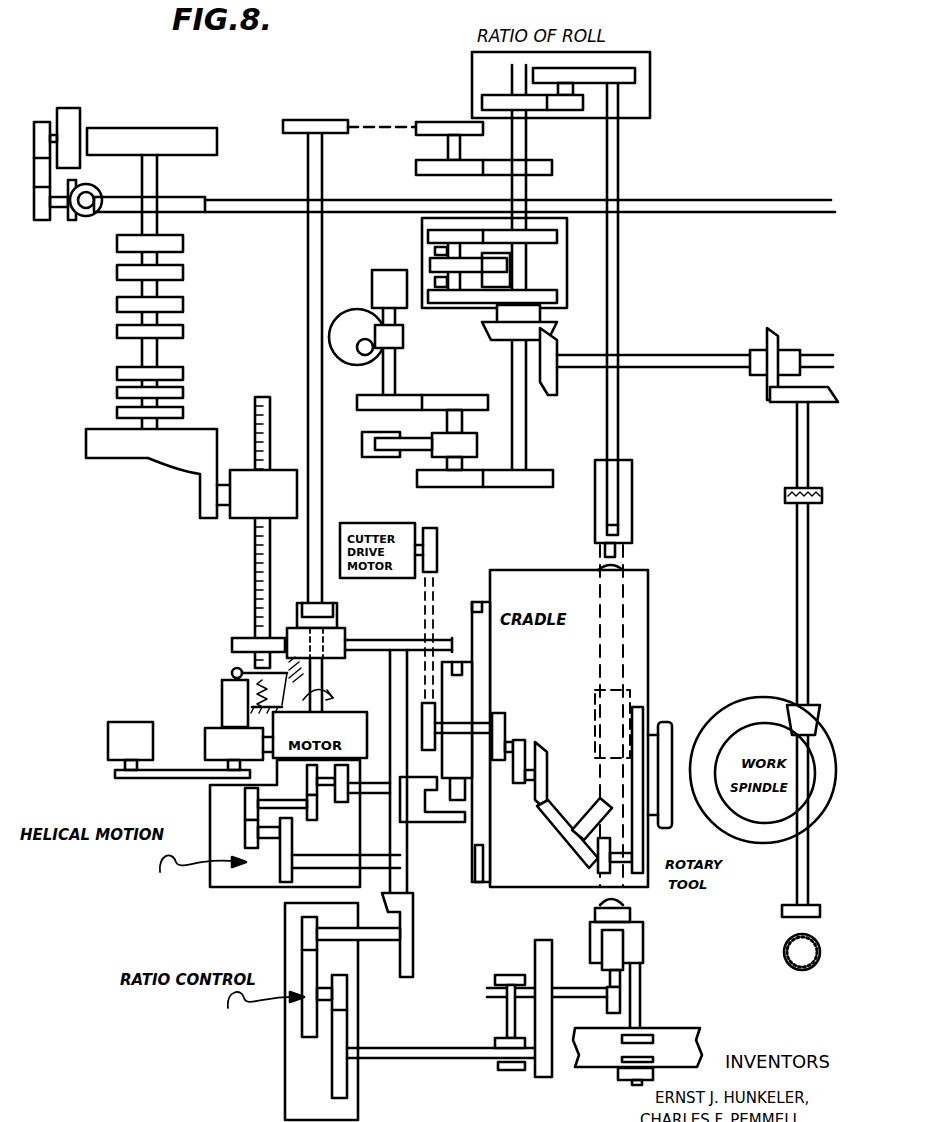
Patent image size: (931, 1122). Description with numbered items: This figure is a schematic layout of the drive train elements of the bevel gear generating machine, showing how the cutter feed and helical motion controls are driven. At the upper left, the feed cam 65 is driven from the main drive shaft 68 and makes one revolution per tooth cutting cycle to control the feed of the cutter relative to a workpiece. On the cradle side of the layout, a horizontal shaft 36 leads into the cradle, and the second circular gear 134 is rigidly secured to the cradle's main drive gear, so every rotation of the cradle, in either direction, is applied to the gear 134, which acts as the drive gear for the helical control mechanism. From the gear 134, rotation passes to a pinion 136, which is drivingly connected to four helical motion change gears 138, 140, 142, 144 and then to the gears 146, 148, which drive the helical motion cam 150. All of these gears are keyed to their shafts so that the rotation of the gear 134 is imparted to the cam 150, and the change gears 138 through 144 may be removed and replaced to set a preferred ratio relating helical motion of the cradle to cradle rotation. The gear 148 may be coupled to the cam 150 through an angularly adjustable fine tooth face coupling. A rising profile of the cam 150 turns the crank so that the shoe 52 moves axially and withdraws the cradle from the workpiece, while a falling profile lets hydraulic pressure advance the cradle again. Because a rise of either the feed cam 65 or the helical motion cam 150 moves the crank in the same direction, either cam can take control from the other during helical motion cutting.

The feed cam 65 is at (217, 140).
The main drive shaft 68 is at (150, 182).
The shoe 52 is at (479, 636).
The cradle shaft 36 is at (455, 725).
The second circular gear 134 is at (490, 828).
The pinion 136 is at (470, 882).
The helical motion change gear 138 is at (280, 870).
The helical motion change gear 140 is at (293, 838).
The helical motion change gear 142 is at (246, 836).
The helical motion change gear 144 is at (246, 800).
The gear 146 is at (313, 808).
The gear 148 is at (308, 779).
The helical motion cam 150 is at (345, 800).